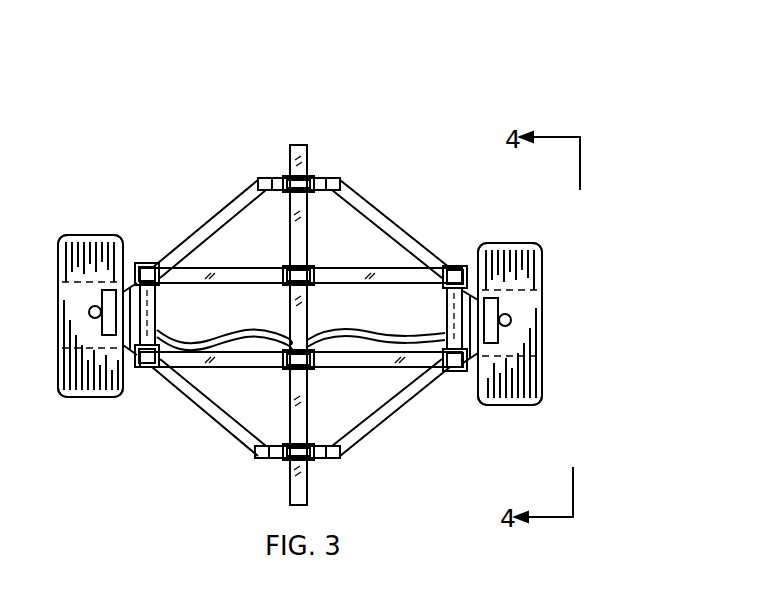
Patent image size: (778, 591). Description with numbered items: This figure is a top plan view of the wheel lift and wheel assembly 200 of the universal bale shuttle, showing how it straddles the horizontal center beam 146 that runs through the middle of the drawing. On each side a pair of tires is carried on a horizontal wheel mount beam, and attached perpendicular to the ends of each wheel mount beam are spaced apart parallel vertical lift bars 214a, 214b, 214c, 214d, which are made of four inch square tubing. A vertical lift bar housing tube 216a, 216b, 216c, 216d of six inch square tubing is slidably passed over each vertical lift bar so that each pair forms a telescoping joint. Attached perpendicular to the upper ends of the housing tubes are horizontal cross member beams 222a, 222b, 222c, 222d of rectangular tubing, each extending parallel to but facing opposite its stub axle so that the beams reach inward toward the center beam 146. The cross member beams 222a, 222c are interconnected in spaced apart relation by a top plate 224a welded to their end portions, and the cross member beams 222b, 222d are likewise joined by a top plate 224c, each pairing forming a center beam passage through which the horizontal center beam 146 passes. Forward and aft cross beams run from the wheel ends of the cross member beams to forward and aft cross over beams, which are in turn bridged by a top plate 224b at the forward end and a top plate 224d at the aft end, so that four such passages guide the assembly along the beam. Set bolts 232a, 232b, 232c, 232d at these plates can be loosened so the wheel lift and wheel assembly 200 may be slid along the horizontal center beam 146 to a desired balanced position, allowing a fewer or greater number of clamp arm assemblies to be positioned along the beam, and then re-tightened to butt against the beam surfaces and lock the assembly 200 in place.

The wheel lift and wheel assembly 200 is at (498, 86).
The horizontal center beam 146 is at (294, 148).
The top plate 224a is at (271, 366).
The top plate 224b is at (257, 458).
The top plate 224c is at (258, 178).
The top plate 224d is at (327, 178).
The set bolt 232a is at (308, 458).
The set bolt 232b is at (255, 452).
The set bolt 232c is at (272, 284).
The set bolt 232d is at (312, 178).
The cross member beam 222a is at (380, 370).
The cross member beam 222b is at (387, 270).
The cross member beam 222c is at (200, 402).
The cross member beam 222d is at (252, 181).
The vertical lift bar housing tube 216a is at (458, 375).
The vertical lift bar housing tube 216b is at (464, 266).
The vertical lift bar housing tube 216c is at (182, 332).
The vertical lift bar housing tube 216d is at (131, 262).
The vertical lift bar 214a is at (478, 395).
The vertical lift bar 214b is at (480, 248).
The vertical lift bar 214c is at (118, 394).
The vertical lift bar 214d is at (157, 265).